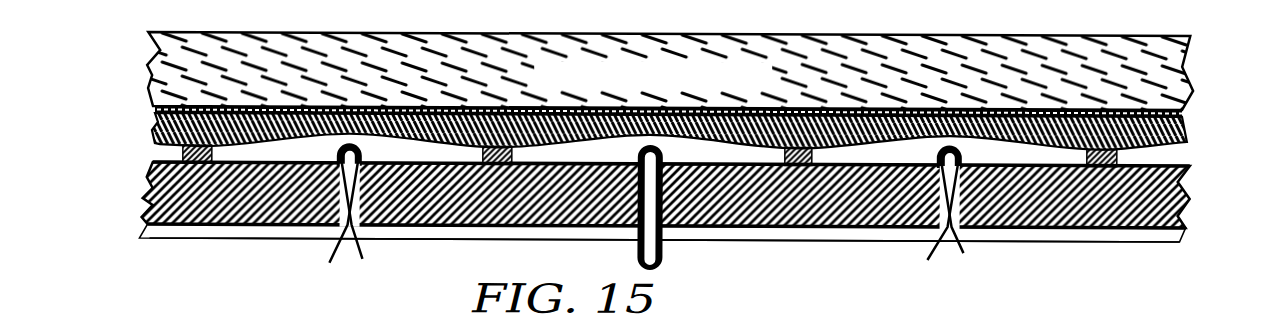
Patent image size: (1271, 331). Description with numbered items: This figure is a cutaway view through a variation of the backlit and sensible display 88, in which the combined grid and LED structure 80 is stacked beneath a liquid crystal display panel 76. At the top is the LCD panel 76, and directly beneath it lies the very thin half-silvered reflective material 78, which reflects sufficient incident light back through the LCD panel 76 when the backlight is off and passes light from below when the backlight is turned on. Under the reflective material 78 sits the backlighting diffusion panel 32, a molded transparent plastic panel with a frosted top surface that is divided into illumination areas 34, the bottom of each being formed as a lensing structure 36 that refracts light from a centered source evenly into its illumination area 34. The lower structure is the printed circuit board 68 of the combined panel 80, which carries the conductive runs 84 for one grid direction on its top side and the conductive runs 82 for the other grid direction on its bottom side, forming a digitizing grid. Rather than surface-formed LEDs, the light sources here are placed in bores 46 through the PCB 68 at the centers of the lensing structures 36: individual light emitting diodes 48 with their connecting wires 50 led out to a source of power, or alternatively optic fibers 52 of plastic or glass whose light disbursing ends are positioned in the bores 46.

The liquid crystal display panel 76 is at (698, 71).
The half-silvered reflective material 78 is at (1183, 112).
The backlighting diffusion panel 32 is at (1182, 134).
The conductive runs 84 is at (1117, 149).
The printed circuit board 68 is at (1160, 178).
The conductive runs 82 is at (1152, 235).
The combined grid and LED structure 80 is at (1072, 244).
The backlit and sensible display 88 is at (240, 251).
The light emitting diode 48 is at (284, 248).
The connecting wires 50 is at (369, 246).
The lensing structure 36 is at (600, 150).
The optic fiber 52 is at (650, 226).
The illumination area 34 is at (699, 150).
The bore 46 is at (942, 244).